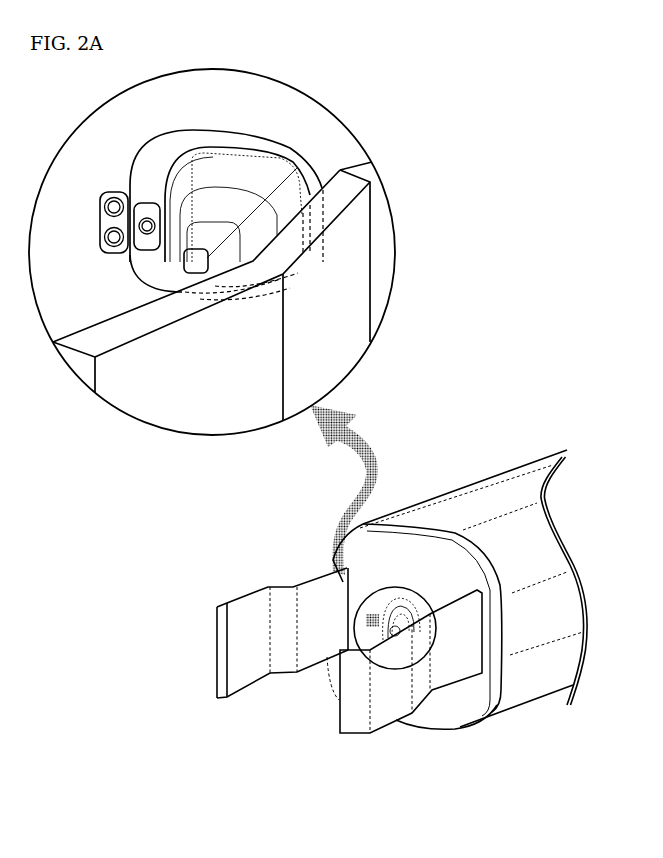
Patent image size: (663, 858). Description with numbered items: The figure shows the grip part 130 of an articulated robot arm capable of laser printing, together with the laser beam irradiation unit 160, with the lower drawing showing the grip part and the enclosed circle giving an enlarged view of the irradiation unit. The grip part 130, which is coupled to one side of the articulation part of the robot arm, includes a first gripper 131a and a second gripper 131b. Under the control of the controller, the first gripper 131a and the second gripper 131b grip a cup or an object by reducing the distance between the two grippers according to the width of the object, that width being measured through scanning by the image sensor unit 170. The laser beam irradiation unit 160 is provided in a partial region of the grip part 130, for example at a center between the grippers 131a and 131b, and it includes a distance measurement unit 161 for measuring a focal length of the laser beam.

The grip part 130 is at (359, 633).
The first gripper 131a is at (218, 696).
The second gripper 131b is at (370, 733).
The laser beam irradiation unit 160 is at (250, 163).
The distance measurement unit 161 is at (140, 258).
The image sensor unit 170 is at (118, 192).